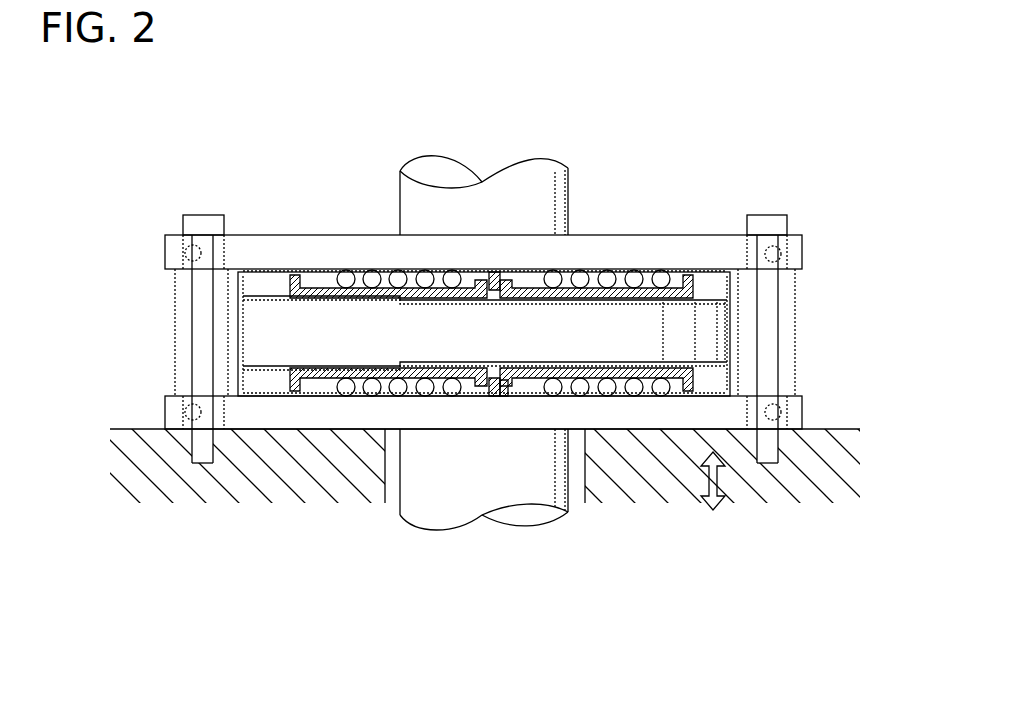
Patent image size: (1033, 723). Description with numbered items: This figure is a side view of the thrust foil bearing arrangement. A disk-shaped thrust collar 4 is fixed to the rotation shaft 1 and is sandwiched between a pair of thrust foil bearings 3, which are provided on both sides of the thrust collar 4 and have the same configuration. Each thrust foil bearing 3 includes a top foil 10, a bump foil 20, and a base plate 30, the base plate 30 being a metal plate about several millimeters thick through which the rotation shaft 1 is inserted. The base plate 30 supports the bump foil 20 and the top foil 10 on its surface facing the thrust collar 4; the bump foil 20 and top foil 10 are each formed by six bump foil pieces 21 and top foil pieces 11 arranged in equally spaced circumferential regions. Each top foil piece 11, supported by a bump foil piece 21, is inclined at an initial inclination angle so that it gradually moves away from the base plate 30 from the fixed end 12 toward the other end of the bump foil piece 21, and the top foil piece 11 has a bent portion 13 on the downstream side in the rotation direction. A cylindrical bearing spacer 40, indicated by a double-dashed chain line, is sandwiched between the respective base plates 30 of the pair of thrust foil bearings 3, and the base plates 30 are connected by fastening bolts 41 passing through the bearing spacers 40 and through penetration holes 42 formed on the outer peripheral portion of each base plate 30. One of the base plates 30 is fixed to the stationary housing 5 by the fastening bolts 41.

The rotation shaft 1 is at (397, 190).
The thrust foil bearing 3 is at (676, 198).
The thrust collar 4 is at (708, 332).
The housing 5 is at (273, 473).
The top foil 10 is at (607, 287).
The top foil piece 11 is at (373, 278).
The fixed end 12 is at (495, 272).
The bent portion 13 is at (492, 397).
The bump foil 20 is at (627, 275).
The bump foil piece 21 is at (347, 272).
The base plate 30 is at (705, 253).
The bearing spacer 40 is at (795, 330).
The fastening bolt 41 is at (203, 215).
The penetration hole 42 is at (186, 252).